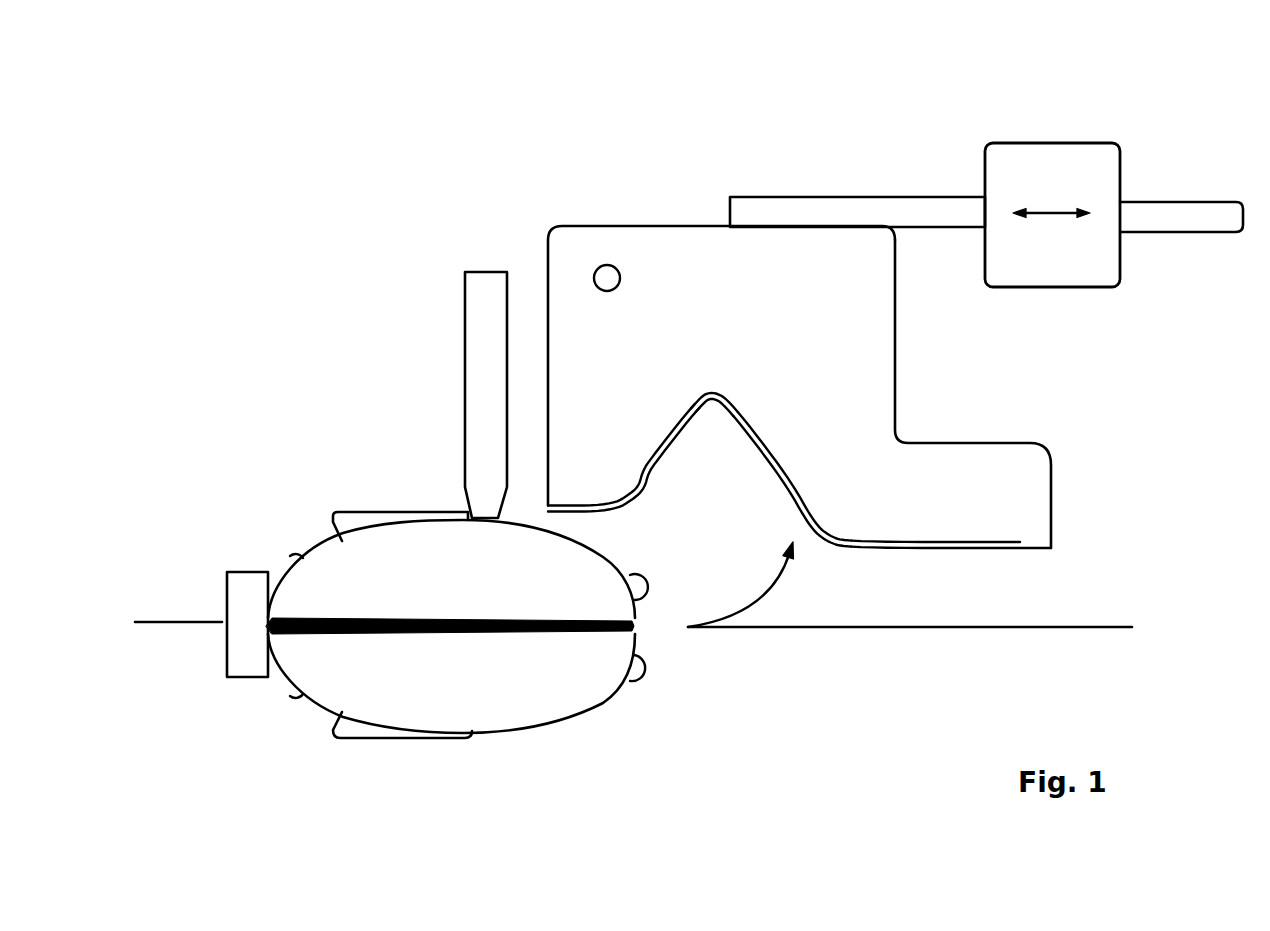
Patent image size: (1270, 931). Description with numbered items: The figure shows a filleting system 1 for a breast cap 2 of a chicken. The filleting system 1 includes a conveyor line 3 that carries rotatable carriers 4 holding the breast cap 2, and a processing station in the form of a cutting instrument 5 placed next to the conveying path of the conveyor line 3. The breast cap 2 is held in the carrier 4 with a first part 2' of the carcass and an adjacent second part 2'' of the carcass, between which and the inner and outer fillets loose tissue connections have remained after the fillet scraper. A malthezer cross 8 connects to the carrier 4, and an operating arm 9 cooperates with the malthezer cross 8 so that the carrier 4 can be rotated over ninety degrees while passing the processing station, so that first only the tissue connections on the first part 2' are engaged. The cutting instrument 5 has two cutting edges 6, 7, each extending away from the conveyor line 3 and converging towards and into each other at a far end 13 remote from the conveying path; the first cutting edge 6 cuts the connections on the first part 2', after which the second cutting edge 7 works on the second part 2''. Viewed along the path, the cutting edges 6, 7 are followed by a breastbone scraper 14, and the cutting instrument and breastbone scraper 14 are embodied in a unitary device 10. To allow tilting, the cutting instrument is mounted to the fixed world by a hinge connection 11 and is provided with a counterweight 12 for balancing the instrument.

The filleting system 1 is at (380, 326).
The breast cap 2 is at (457, 667).
The first part of the carcass 2' is at (451, 569).
The second part of the carcass 2'' is at (451, 683).
The conveyor line 3 is at (840, 640).
The carrier 4 is at (252, 689).
The cutting instrument 5 is at (668, 214).
The first cutting edge 6 is at (665, 463).
The second cutting edge 7 is at (776, 491).
The malthezer cross 8 is at (391, 753).
The operating arm 9 is at (453, 433).
The unitary device 10 is at (860, 369).
The hinge connection 11 is at (586, 264).
The counterweight 12 is at (1058, 128).
The far end 13 is at (721, 378).
The breastbone scraper 14 is at (1015, 531).